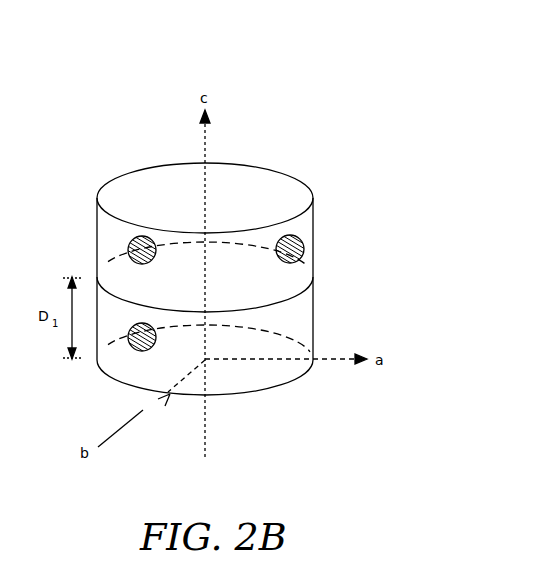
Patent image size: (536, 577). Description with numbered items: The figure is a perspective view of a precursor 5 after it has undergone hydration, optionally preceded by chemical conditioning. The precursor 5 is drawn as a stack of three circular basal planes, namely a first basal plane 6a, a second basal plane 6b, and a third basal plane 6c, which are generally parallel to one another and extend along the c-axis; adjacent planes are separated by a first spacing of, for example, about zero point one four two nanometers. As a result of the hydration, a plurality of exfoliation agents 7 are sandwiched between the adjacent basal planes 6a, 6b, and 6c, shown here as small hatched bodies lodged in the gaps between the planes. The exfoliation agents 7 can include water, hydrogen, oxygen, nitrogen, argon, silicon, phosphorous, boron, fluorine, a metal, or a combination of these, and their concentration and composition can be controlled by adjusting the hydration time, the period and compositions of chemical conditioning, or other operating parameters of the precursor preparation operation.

The precursor 5 is at (382, 142).
The first basal plane 6a is at (306, 186).
The second basal plane 6b is at (314, 279).
The third basal plane 6c is at (333, 352).
The exfoliation agents 7 is at (129, 240).